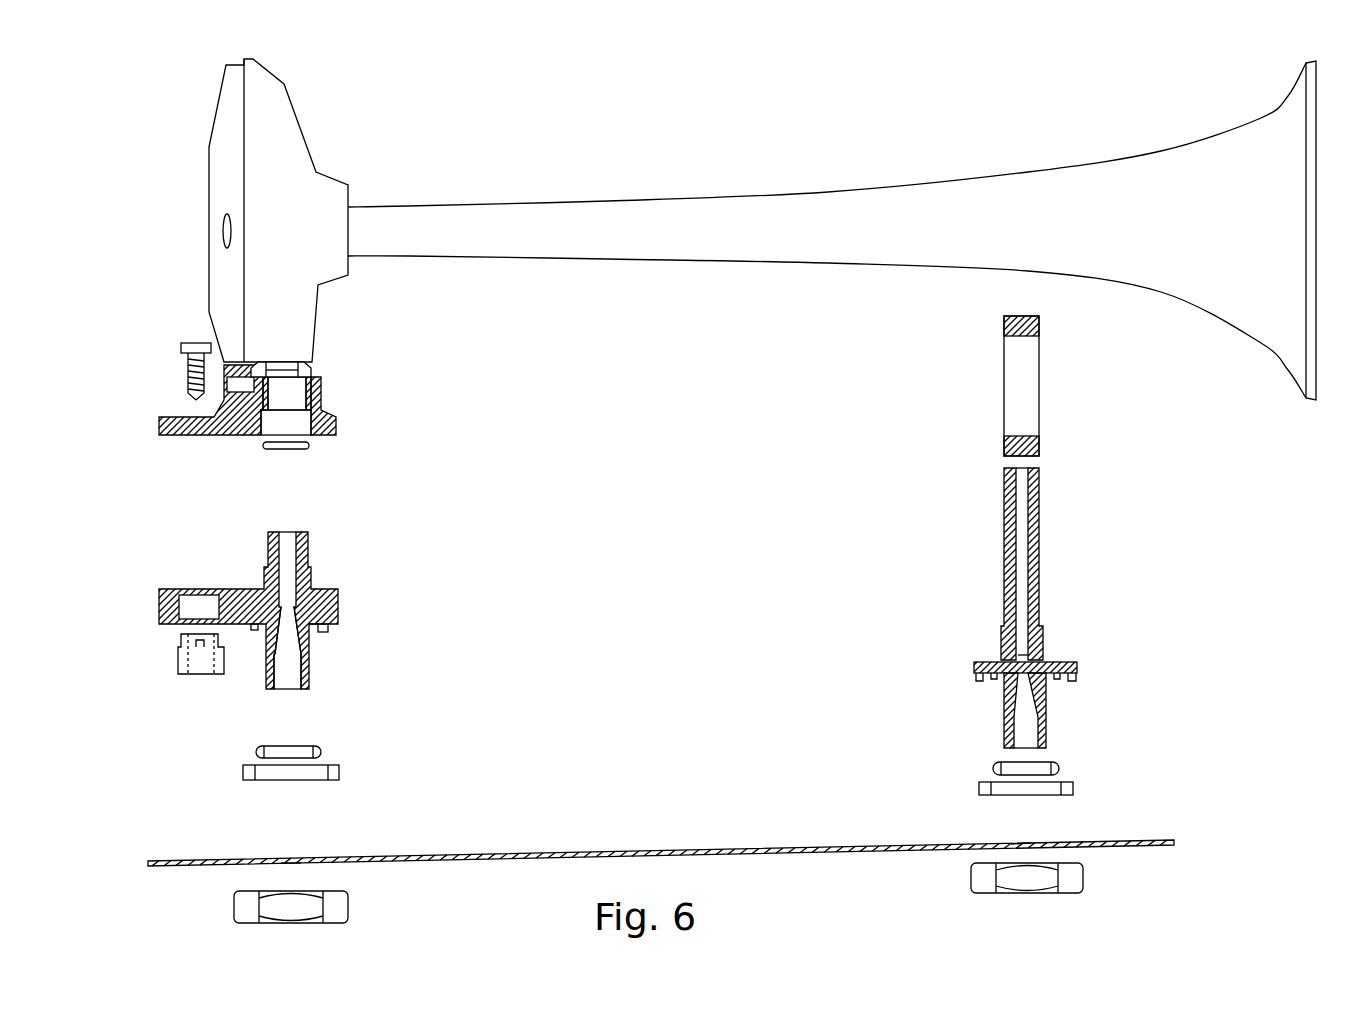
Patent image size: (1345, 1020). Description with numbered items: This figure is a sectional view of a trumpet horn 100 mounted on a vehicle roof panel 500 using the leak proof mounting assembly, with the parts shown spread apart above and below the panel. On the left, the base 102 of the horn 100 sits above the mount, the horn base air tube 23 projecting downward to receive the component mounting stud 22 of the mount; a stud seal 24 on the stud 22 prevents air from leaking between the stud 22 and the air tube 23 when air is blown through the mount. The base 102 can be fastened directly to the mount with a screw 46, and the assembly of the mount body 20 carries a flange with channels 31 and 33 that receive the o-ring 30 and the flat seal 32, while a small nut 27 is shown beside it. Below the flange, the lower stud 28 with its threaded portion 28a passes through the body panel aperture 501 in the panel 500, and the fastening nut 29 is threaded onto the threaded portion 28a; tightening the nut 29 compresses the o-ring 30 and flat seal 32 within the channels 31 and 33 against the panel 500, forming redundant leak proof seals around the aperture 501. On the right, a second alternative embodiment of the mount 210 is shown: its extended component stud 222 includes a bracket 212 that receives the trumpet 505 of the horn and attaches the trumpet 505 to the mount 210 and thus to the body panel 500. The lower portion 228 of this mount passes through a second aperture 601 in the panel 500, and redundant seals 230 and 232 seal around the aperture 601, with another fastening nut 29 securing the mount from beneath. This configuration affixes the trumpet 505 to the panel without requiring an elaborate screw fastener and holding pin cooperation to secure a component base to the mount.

The trumpet horn 100 is at (282, 103).
The trumpet 505 is at (1017, 186).
The screw 46 is at (194, 343).
The horn base air tube 23 is at (302, 417).
The base 102 is at (335, 428).
The stud seal 24 is at (308, 441).
The component mounting stud 22 is at (263, 573).
The fitting 20 is at (307, 531).
The channel 33 is at (327, 621).
The channel 31 is at (313, 618).
The lower stud 28 is at (308, 634).
The threaded portion 28a is at (308, 668).
The nut 27 is at (177, 652).
The o-ring 30 is at (318, 742).
The flat seal 32 is at (335, 765).
The roof panel 500 is at (631, 843).
The body panel aperture 501 is at (290, 854).
The aperture 601 is at (1020, 836).
The fastening nut 29 is at (347, 900).
The bracket 212 is at (1022, 357).
The extended component stud 222 is at (1040, 522).
The mount 210 is at (1068, 653).
The tapered bore section 228 is at (1045, 730).
The seal 232 is at (1050, 770).
The seal 230 is at (1070, 789).